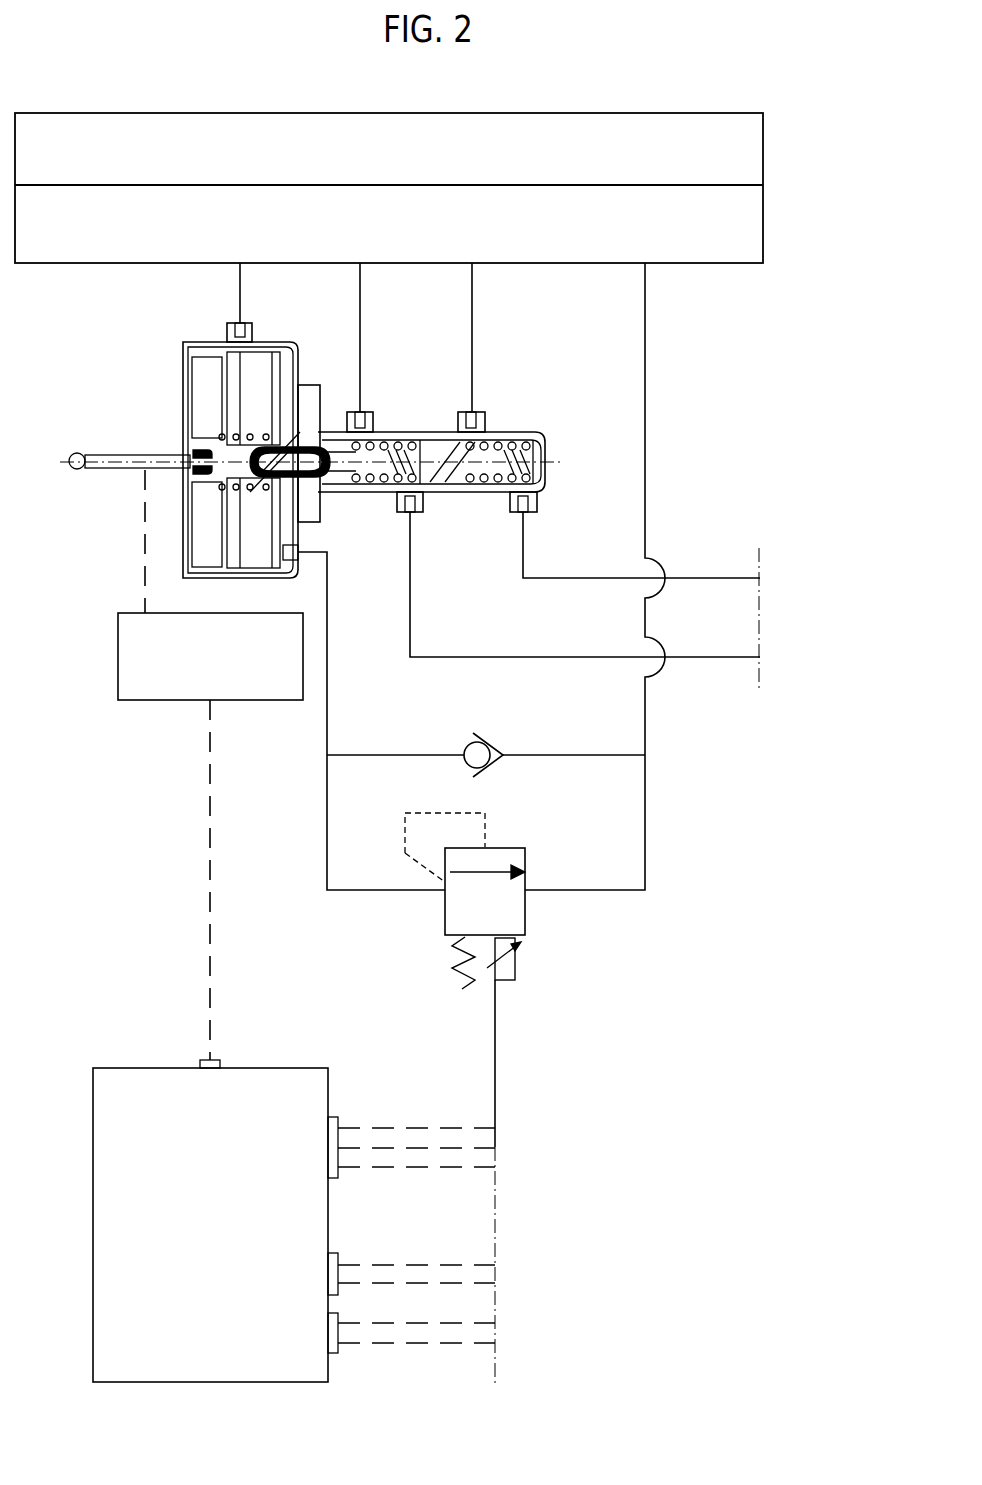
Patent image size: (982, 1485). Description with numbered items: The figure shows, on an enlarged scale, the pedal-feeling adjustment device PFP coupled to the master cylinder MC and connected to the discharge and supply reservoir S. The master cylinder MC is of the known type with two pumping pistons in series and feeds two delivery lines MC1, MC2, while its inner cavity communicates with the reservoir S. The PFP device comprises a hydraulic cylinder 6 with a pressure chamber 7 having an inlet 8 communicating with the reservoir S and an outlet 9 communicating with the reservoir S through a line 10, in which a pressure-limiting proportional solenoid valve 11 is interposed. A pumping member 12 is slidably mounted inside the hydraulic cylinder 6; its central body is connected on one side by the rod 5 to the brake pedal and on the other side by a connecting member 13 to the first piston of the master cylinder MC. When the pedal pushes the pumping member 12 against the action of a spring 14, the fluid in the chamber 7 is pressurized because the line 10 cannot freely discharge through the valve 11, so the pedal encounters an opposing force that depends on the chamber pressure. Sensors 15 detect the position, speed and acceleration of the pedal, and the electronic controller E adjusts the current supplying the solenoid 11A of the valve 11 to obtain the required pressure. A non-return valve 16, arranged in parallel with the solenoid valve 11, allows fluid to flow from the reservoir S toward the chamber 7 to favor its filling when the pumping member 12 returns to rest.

The discharge and supply reservoir S is at (654, 112).
The pedal feeling pump adjustment device PFP is at (302, 445).
The master cylinder MC is at (505, 427).
The delivery line MC1 is at (720, 576).
The delivery line MC2 is at (412, 612).
The electronic controller E is at (147, 1066).
The rod 5 is at (93, 472).
The hydraulic cylinder 6 is at (283, 372).
The pressure chamber 7 is at (258, 565).
The inlet 8 is at (236, 320).
The outlet 9 is at (302, 550).
The line 10 is at (645, 442).
The pressure-limiting proportional solenoid valve 11 is at (531, 908).
The solenoid 11A is at (514, 973).
The pumping member 12 is at (250, 508).
The connecting member 13 is at (327, 440).
The spring 14 is at (253, 493).
The sensor 15 is at (168, 690).
The non-return valve 16 is at (492, 742).